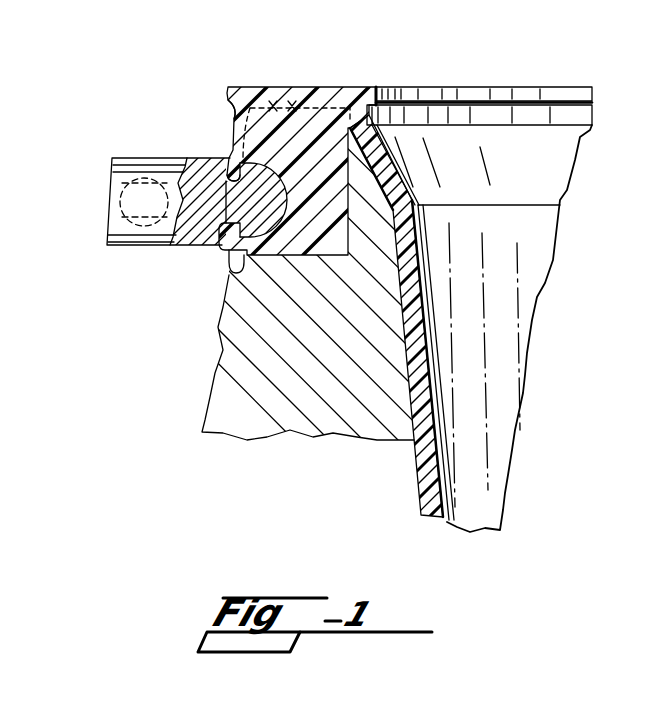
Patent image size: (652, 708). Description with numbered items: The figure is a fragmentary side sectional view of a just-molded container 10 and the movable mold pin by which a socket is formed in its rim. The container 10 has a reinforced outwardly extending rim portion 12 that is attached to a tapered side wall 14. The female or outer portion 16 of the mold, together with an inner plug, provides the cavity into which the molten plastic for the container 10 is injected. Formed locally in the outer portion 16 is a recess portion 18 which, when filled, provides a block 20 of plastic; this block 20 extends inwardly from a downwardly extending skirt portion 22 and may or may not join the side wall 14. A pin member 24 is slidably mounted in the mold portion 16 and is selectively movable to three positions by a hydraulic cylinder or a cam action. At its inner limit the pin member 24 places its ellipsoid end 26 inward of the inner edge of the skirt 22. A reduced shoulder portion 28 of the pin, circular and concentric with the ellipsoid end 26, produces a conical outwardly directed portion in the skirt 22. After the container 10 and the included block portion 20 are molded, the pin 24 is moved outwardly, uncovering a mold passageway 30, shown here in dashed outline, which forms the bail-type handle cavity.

The molded container 10 is at (539, 354).
The rim portion 12 is at (292, 100).
The tapered side wall 14 is at (421, 490).
The outer portion of the mold 16 is at (250, 417).
The recess portion 18 is at (283, 252).
The block 20 is at (274, 106).
The skirt portion 22 is at (229, 148).
The pin member 24 is at (113, 177).
The ellipsoid end 26 is at (243, 262).
The reduced shoulder portion 28 is at (229, 178).
The mold passageway 30 is at (118, 203).